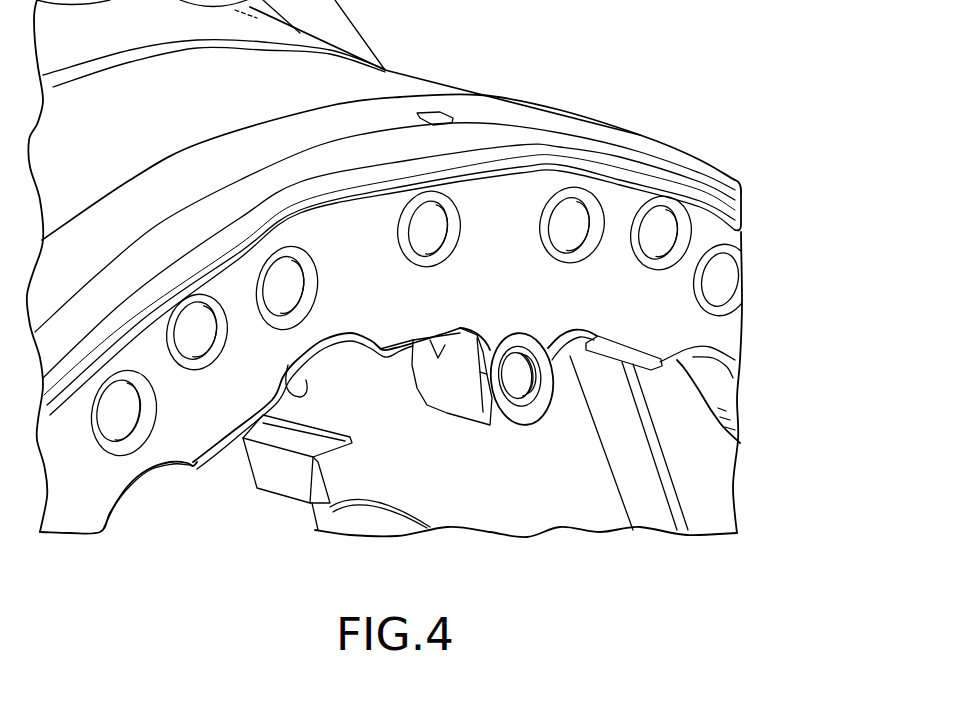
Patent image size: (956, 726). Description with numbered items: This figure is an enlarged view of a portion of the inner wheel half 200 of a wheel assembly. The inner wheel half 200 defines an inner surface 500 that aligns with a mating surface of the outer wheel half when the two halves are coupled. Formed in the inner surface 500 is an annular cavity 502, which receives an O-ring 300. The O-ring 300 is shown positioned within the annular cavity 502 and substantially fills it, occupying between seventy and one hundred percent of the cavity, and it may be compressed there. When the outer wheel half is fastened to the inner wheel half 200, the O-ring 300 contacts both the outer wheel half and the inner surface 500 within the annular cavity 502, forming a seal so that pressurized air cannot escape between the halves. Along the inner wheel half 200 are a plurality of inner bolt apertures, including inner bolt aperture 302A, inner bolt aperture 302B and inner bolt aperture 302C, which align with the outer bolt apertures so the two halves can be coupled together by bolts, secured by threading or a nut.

The inner wheel half 200 is at (477, 107).
The O-ring 300 is at (647, 170).
The inner bolt aperture 302A is at (570, 210).
The inner bolt aperture 302B is at (665, 220).
The inner bolt aperture 302C is at (723, 270).
The inner surface 500 is at (640, 340).
The annular cavity 502 is at (720, 187).